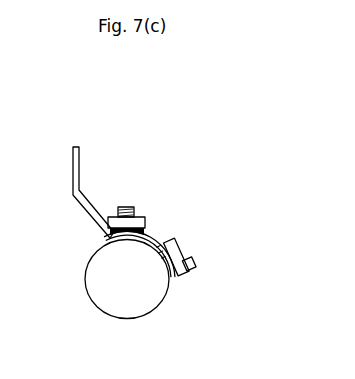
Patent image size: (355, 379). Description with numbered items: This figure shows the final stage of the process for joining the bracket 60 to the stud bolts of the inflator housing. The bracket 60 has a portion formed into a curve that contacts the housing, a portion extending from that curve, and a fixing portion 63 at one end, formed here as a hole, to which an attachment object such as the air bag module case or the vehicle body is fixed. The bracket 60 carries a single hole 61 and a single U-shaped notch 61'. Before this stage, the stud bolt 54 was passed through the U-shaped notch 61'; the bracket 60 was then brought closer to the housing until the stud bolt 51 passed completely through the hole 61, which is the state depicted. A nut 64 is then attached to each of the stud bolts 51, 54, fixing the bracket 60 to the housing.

The bracket 60 is at (79, 181).
The fixing portion 63 is at (73, 178).
The stud bolt 51 is at (126, 207).
The nut 64 is at (145, 217).
The stud bolt 54 is at (187, 250).
The hole 61 is at (113, 278).
The U-shaped notch 61' is at (219, 281).